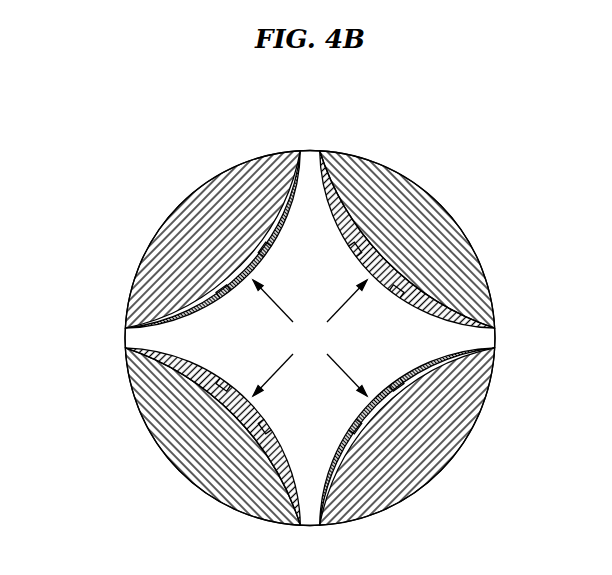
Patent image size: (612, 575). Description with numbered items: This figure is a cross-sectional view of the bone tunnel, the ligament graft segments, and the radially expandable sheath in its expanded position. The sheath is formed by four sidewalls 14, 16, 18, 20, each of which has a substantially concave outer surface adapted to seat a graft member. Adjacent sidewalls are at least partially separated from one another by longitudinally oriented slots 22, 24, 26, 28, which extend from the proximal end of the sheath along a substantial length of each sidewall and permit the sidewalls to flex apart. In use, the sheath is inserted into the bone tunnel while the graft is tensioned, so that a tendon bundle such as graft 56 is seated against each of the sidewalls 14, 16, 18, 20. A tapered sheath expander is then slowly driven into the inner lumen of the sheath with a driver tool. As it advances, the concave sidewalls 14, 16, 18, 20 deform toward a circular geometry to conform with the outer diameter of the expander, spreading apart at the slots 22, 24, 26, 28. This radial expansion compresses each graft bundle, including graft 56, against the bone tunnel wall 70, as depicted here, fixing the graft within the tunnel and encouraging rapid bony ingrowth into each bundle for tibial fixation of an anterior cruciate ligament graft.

The sidewall 14 is at (283, 178).
The sidewall 16 is at (482, 304).
The sidewall 18 is at (488, 385).
The sidewall 20 is at (277, 483).
The longitudinally oriented slot 22 is at (316, 152).
The longitudinally oriented slot 24 is at (496, 334).
The longitudinally oriented slot 26 is at (322, 527).
The longitudinally oriented slot 28 is at (125, 340).
The graft 56 is at (188, 208).
The bone tunnel wall 70 is at (434, 197).